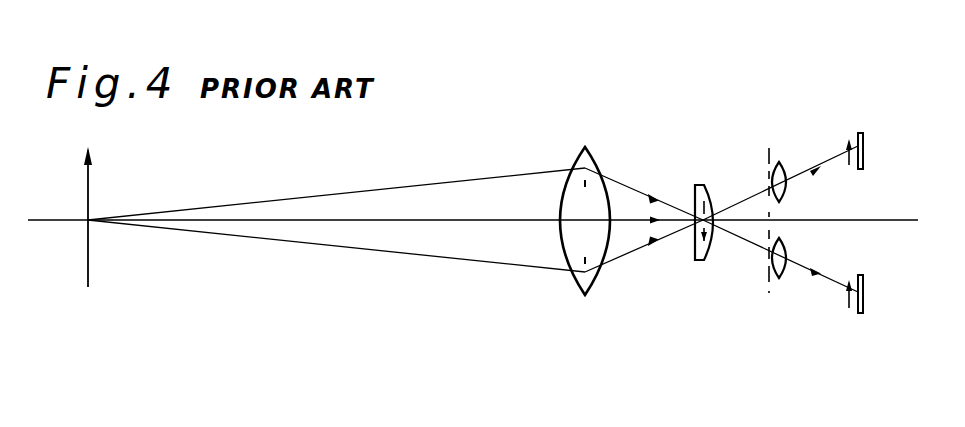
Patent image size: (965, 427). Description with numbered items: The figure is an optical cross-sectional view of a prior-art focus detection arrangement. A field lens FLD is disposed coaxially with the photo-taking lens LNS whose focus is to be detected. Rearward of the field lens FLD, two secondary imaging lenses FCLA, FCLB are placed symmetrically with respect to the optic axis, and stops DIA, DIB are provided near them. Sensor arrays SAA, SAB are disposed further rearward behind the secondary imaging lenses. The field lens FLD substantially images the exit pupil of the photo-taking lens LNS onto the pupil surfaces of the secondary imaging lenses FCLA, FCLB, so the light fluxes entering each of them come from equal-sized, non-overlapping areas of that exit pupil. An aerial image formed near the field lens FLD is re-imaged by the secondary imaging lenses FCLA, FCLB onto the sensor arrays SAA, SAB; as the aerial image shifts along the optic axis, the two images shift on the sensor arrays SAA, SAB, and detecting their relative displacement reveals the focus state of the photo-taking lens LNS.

The photo-taking lens LNS is at (584, 148).
The field lens FLD is at (697, 186).
The stop DIA is at (768, 152).
The stop DIB is at (771, 233).
The secondary imaging lens FCLA is at (778, 163).
The secondary imaging lens FCLB is at (778, 278).
The sensor array SAA is at (864, 137).
The sensor array SAB is at (865, 290).